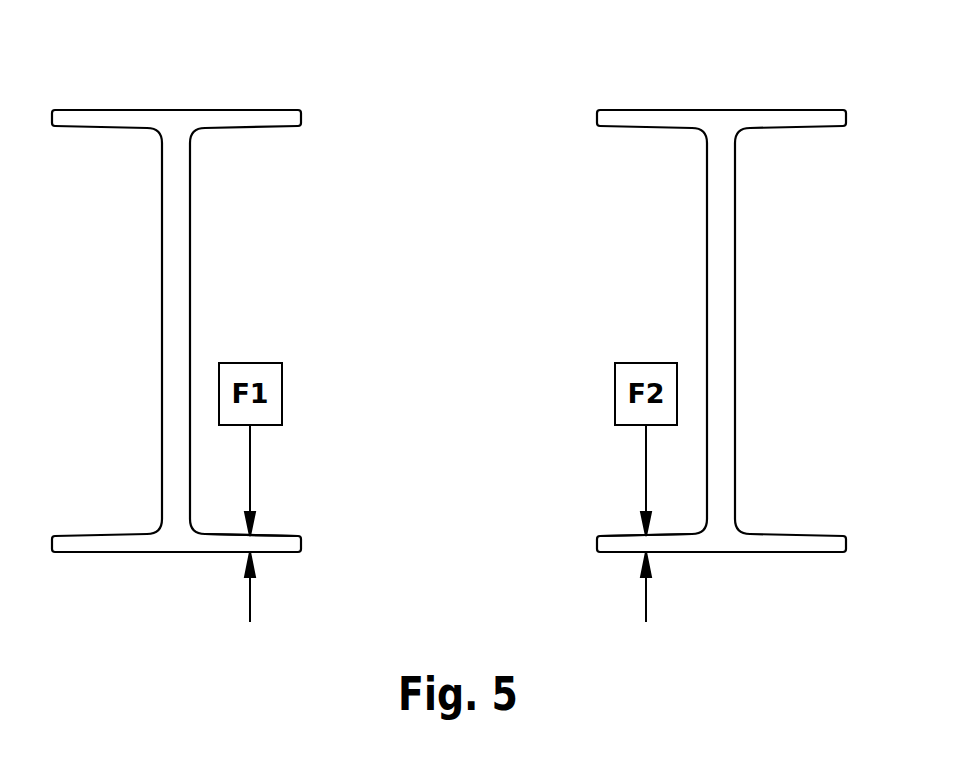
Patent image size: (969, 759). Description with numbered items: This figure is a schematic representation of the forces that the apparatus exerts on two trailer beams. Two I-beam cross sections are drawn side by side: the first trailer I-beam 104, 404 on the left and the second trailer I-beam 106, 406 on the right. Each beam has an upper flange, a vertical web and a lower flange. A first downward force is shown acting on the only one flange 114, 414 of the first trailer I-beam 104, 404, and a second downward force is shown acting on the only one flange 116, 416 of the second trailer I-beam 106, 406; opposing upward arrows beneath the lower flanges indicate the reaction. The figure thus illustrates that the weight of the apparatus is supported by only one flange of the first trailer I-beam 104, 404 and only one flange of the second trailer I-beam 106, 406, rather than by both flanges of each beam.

The first trailer I-beam 104 is at (176, 294).
The first trailer I-beam 404 is at (175, 110).
The second trailer I-beam 106 is at (721, 294).
The second trailer I-beam 406 is at (720, 110).
The only one flange 114 is at (303, 502).
The only one flange 414 is at (288, 535).
The only one flange 116 is at (604, 500).
The only one flange 416 is at (620, 535).